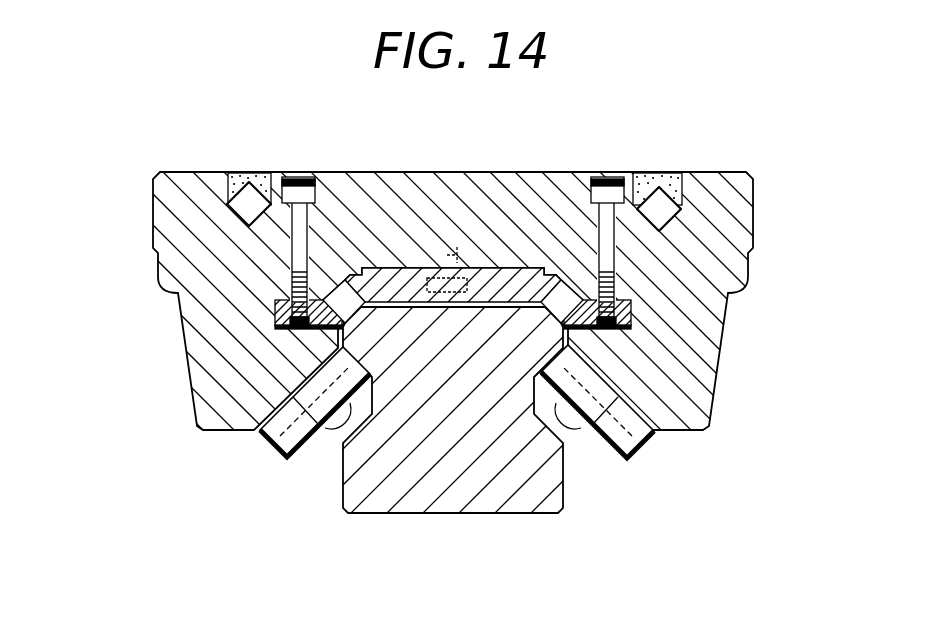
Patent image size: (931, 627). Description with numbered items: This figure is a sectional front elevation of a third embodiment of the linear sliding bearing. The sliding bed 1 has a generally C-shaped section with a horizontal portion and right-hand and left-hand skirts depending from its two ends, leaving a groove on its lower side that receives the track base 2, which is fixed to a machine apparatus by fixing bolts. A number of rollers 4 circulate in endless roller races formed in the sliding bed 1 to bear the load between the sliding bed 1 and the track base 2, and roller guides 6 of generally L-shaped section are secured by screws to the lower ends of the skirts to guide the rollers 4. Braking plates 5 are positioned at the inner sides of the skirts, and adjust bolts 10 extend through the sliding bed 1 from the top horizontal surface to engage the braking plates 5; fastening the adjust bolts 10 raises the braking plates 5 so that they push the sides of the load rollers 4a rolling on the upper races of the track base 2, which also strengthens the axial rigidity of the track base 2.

The sliding bed 1 is at (416, 169).
The track base 2 is at (470, 512).
The rollers 4 is at (243, 174).
The load rollers 4a is at (335, 282).
The braking plate 5 is at (276, 312).
The roller guides 6 is at (290, 460).
The adjust bolts 10 is at (293, 176).